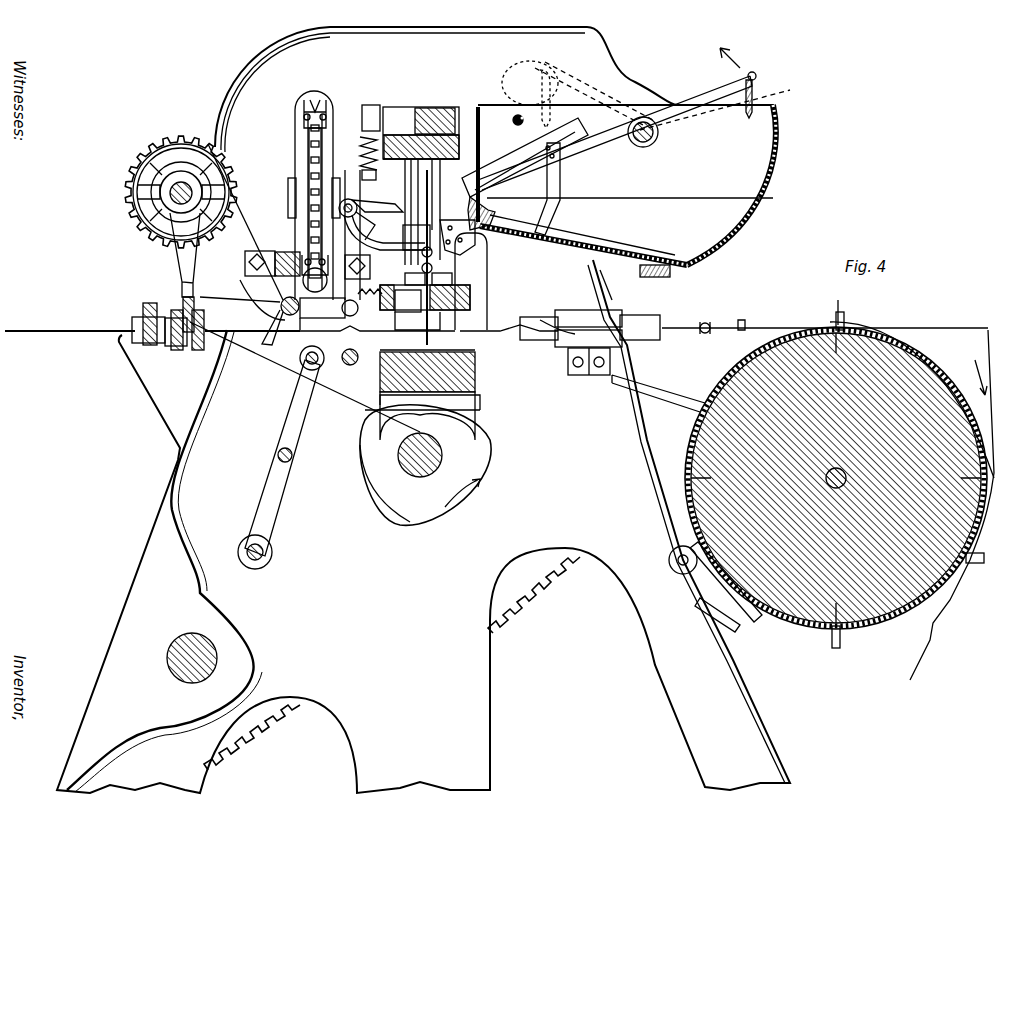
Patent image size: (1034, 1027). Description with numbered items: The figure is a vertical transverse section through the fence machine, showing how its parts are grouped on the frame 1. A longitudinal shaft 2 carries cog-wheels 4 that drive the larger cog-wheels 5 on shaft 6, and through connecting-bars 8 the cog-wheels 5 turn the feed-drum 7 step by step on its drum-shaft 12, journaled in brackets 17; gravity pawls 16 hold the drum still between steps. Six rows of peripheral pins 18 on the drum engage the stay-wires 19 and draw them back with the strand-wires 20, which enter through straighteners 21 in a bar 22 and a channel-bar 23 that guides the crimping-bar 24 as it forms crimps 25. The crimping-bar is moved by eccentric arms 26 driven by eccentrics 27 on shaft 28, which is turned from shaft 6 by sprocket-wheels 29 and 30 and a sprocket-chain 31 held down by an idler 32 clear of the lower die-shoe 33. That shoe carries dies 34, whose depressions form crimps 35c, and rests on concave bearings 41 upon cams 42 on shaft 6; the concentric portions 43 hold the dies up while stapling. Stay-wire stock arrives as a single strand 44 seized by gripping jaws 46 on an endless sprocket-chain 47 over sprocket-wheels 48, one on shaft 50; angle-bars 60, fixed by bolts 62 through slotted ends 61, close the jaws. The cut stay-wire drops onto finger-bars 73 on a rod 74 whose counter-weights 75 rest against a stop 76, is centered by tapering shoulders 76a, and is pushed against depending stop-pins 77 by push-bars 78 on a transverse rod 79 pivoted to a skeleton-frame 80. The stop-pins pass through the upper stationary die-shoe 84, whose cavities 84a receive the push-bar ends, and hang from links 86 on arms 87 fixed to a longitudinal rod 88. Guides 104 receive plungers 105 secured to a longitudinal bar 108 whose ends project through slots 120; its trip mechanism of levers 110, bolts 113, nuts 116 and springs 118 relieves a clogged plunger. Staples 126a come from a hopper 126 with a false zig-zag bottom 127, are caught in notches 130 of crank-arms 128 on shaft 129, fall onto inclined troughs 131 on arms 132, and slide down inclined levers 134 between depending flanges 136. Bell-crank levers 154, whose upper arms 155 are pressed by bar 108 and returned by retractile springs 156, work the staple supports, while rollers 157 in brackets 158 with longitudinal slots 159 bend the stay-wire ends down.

The frame 1 is at (423, 410).
The longitudinal shaft 2 is at (185, 678).
The cog-wheels 4 is at (252, 737).
The larger cog-wheels 5 is at (534, 595).
The longitudinal shaft 6 is at (432, 475).
The feed-drum 7 is at (968, 472).
The connecting-bars 8 is at (684, 395).
The drum-shaft 12 is at (834, 471).
The gravity pawls 16 is at (675, 547).
The brackets 17 is at (750, 620).
The peripheral pins 18 is at (841, 318).
The stay-wires 19 is at (433, 320).
The strand-wires 20 is at (40, 330).
The straighteners 21 is at (134, 318).
The bar 22 is at (170, 350).
The channel-bar 23 is at (196, 350).
The crimping-bar 24 is at (183, 305).
The crimps 25 is at (975, 360).
The eccentric arms 26 is at (182, 262).
The eccentrics 27 is at (180, 192).
The shaft 28 is at (170, 197).
The sprocket-wheel 29 is at (385, 500).
The sprocket-wheel 30 is at (140, 229).
The sprocket-chain 31 is at (282, 395).
The idler 32 is at (318, 372).
The lower die-shoe 33 is at (476, 372).
The dies 34 is at (476, 350).
The crimps 35c is at (715, 332).
The concave bearings 41 is at (480, 437).
The cams 42 is at (490, 467).
The concentric portions 43 is at (490, 497).
The single strand 44 is at (262, 300).
The gripping jaws 46 is at (315, 98).
The endless sprocket-chain 47 is at (304, 122).
The sprocket-wheels 48 is at (309, 158).
The shaft 50 is at (290, 188).
The angle-bars 60 is at (300, 270).
The slotted ends 61 is at (278, 252).
The bolts 62 is at (250, 260).
The finger-bars 73 is at (329, 312).
The rod 74 is at (282, 308).
The counter-weights 75 is at (262, 345).
The stop 76 is at (275, 365).
The tapering shoulders 76a is at (329, 322).
The depending stop-pins 77 is at (452, 280).
The push-bars 78 is at (430, 338).
The transverse rod 79 is at (368, 357).
The skeleton-frame 80 is at (278, 452).
The upper stationary die-shoe 84 is at (470, 298).
The cavities 84a is at (410, 301).
The links 86 is at (432, 258).
The arms 87 is at (384, 232).
The longitudinal rod 88 is at (346, 196).
The guides 104 is at (416, 237).
The plungers 105 is at (412, 178).
The longitudinal bar 108 is at (435, 121).
The levers 110 is at (388, 107).
The bolts 113 is at (370, 105).
The nuts 116 is at (362, 172).
The springs 118 is at (360, 148).
The slots 120 is at (451, 209).
The hopper 126 is at (576, 152).
The staples 126a is at (753, 92).
The false zig-zag bottom 127 is at (582, 233).
The crank-arms 128 is at (712, 92).
The shaft 129 is at (642, 148).
The notches 130 is at (760, 72).
The inclined troughs 131 is at (588, 158).
The arms 132 is at (562, 186).
The inclined levers 134 is at (498, 213).
The depending flanges 136 is at (457, 235).
The bell-crank levers 154 is at (373, 222).
The upper arms 155 is at (377, 198).
The retractile springs 156 is at (367, 309).
The rollers 157 is at (645, 315).
The brackets 158 is at (590, 376).
The longitudinal slots 159 is at (578, 318).